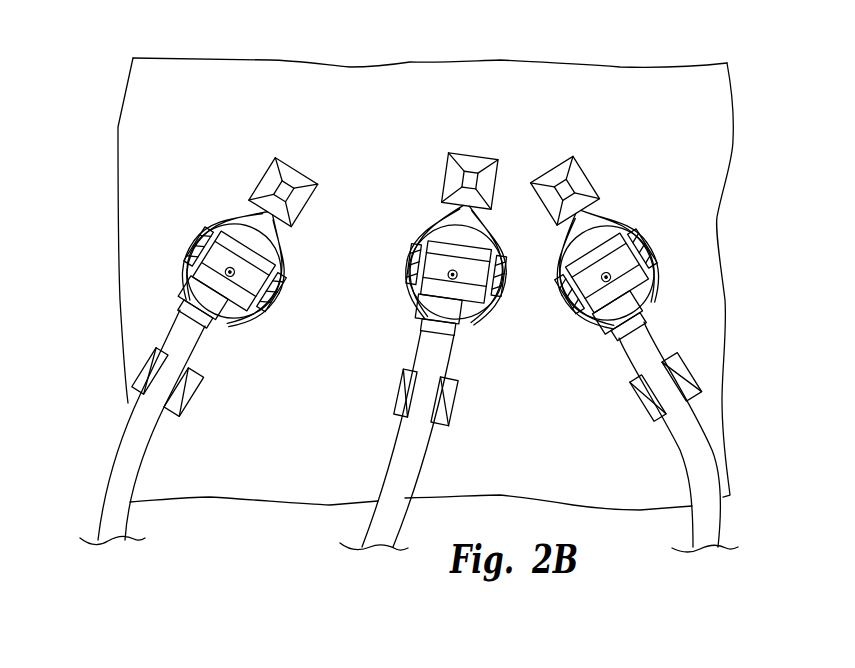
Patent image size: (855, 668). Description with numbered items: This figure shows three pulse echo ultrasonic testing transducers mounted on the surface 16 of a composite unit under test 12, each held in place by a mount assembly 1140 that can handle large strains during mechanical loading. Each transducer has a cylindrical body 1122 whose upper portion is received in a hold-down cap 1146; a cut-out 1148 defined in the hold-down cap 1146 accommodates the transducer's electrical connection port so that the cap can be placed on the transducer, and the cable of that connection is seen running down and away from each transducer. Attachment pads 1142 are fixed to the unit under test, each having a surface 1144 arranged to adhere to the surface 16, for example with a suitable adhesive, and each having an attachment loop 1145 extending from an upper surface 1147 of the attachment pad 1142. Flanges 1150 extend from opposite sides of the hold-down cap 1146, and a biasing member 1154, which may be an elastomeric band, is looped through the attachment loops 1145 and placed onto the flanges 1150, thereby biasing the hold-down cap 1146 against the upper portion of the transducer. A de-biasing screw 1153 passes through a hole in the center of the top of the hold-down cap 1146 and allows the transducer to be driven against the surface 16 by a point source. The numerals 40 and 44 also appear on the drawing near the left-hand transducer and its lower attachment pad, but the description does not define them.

The composite workpiece or unit under test 12 is at (650, 42).
The surface 16 is at (352, 105).
The tube holder 40 is at (145, 242).
The clip 44 is at (148, 370).
The mount assembly 1140 is at (398, 252).
The attachment pad 1142 is at (288, 168).
The surface 1144 is at (310, 175).
The attachment loop 1145 is at (275, 186).
The hold-down cap 1146 is at (203, 263).
The upper surface 1147 is at (300, 200).
The cut-out 1148 is at (192, 303).
The cylindrical body 1122 is at (245, 232).
The flanges 1150 is at (205, 236).
The de-biasing screw 1153 is at (268, 300).
The biasing member 1154 is at (284, 238).